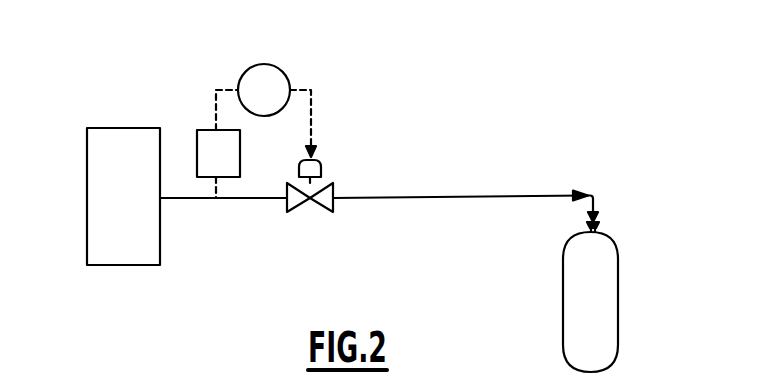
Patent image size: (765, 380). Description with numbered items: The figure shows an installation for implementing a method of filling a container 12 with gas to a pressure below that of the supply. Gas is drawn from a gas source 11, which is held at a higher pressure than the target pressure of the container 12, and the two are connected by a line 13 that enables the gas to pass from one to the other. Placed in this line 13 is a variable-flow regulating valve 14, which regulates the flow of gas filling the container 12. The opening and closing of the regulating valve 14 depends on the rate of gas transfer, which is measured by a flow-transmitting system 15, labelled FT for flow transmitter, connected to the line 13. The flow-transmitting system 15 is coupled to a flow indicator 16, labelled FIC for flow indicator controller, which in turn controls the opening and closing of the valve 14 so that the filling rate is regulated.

The gas source 11 is at (88, 211).
The container 12 is at (618, 307).
The line 13 is at (270, 198).
The variable-flow regulating valve 14 is at (322, 206).
The flow-transmitting system 15 is at (202, 130).
The flow indicator 16 is at (283, 70).